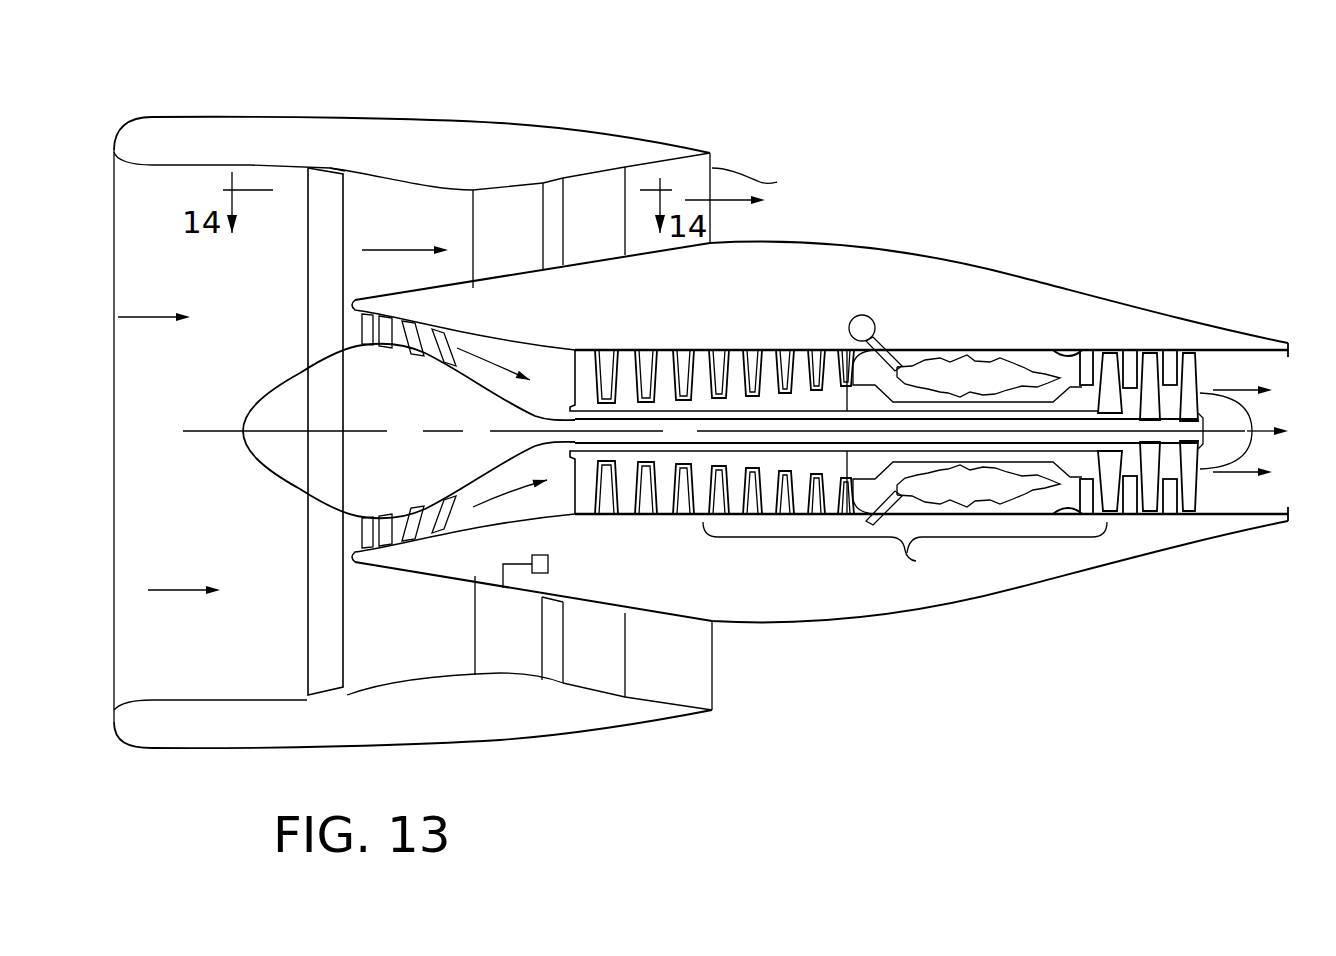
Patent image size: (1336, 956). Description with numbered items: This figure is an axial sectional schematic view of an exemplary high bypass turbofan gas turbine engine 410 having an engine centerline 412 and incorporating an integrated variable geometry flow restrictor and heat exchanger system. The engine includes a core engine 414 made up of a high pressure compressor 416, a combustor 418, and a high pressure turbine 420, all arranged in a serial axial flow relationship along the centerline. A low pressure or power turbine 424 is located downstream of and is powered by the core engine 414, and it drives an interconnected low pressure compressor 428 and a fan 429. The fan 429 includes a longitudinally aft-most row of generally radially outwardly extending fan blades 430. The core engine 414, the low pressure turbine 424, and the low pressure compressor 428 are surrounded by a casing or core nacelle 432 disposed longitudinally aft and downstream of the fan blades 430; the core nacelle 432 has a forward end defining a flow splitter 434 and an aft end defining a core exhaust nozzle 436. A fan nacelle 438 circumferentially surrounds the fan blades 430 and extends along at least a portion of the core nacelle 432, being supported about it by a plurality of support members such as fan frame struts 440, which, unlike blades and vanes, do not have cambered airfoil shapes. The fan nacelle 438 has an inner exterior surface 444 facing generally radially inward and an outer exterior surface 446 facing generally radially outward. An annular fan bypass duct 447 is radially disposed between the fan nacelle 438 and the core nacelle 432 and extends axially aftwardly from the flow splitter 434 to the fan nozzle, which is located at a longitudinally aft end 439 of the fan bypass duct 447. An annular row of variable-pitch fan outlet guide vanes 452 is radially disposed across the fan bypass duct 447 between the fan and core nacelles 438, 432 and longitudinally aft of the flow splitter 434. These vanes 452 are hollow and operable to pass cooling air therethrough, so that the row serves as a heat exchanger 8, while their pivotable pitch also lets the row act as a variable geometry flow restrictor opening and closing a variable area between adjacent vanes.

The bypass turbofan gas turbine engine 410 is at (882, 157).
The engine centerline 412 is at (387, 431).
The core engine 414 is at (889, 497).
The high pressure compressor 416 is at (683, 345).
The combustor 418 is at (960, 350).
The high pressure turbine 420 is at (1109, 350).
The low pressure turbine 424 is at (1187, 352).
The low pressure compressor 428 is at (447, 538).
The fan 429 is at (335, 168).
The fan blades 430 is at (324, 183).
The core nacelle 432 is at (801, 301).
The flow splitter 434 is at (355, 305).
The core exhaust nozzle 436 is at (1288, 357).
The fan nacelle 438 is at (221, 153).
The longitudinally aft end 439 is at (670, 155).
The fan frame struts 440 is at (621, 228).
The inner exterior surface 444 is at (202, 173).
The outer exterior surface 446 is at (258, 114).
The fan bypass duct 447 is at (397, 219).
The variable-pitch fan outlet guide vanes 452 is at (534, 250).
The heat exchanger 8 is at (543, 206).